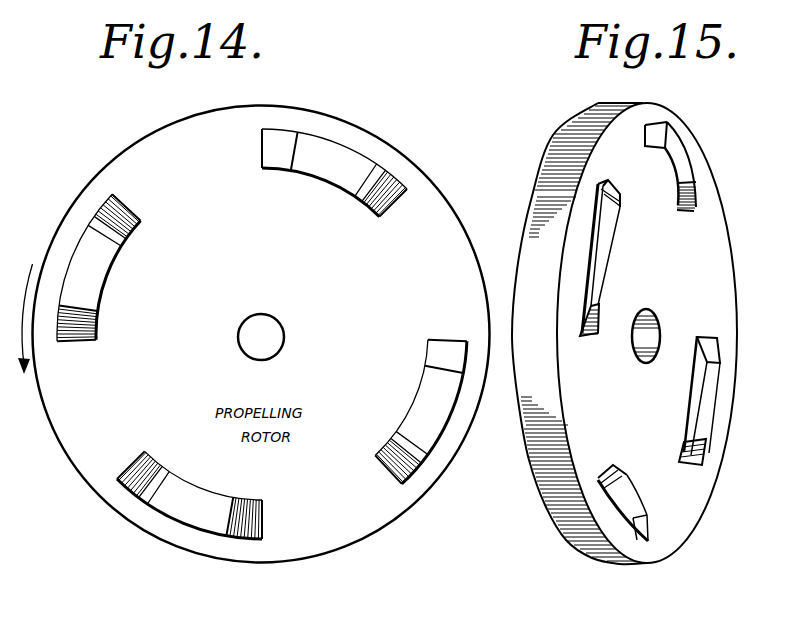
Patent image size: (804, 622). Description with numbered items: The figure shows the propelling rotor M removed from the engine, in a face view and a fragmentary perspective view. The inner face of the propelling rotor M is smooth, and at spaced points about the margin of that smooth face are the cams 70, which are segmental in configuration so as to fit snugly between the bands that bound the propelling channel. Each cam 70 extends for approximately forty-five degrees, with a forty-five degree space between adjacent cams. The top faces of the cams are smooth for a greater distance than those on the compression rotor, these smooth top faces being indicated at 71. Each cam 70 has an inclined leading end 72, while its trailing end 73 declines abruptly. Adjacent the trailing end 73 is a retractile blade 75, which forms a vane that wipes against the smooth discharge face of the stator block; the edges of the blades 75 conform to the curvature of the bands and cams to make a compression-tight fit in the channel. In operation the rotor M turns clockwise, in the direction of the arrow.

In FIG. 14, the cam 70 is at (263, 341).
In FIG. 15, the cam 70 is at (634, 345).
In FIG. 14, the smooth top face 71 is at (350, 168).
In FIG. 15, the smooth top face 71 is at (681, 173).
In FIG. 14, the inclined leading end 72 is at (277, 160).
In FIG. 15, the inclined leading end 72 is at (657, 133).
In FIG. 14, the trailing end 73 is at (383, 216).
In FIG. 15, the trailing end 73 is at (697, 203).
In FIG. 14, the retractile blade 75 is at (380, 170).
In FIG. 15, the retractile blade 75 is at (597, 208).
In FIG. 14, the propelling rotor M is at (261, 334).
In FIG. 15, the propelling rotor M is at (710, 260).